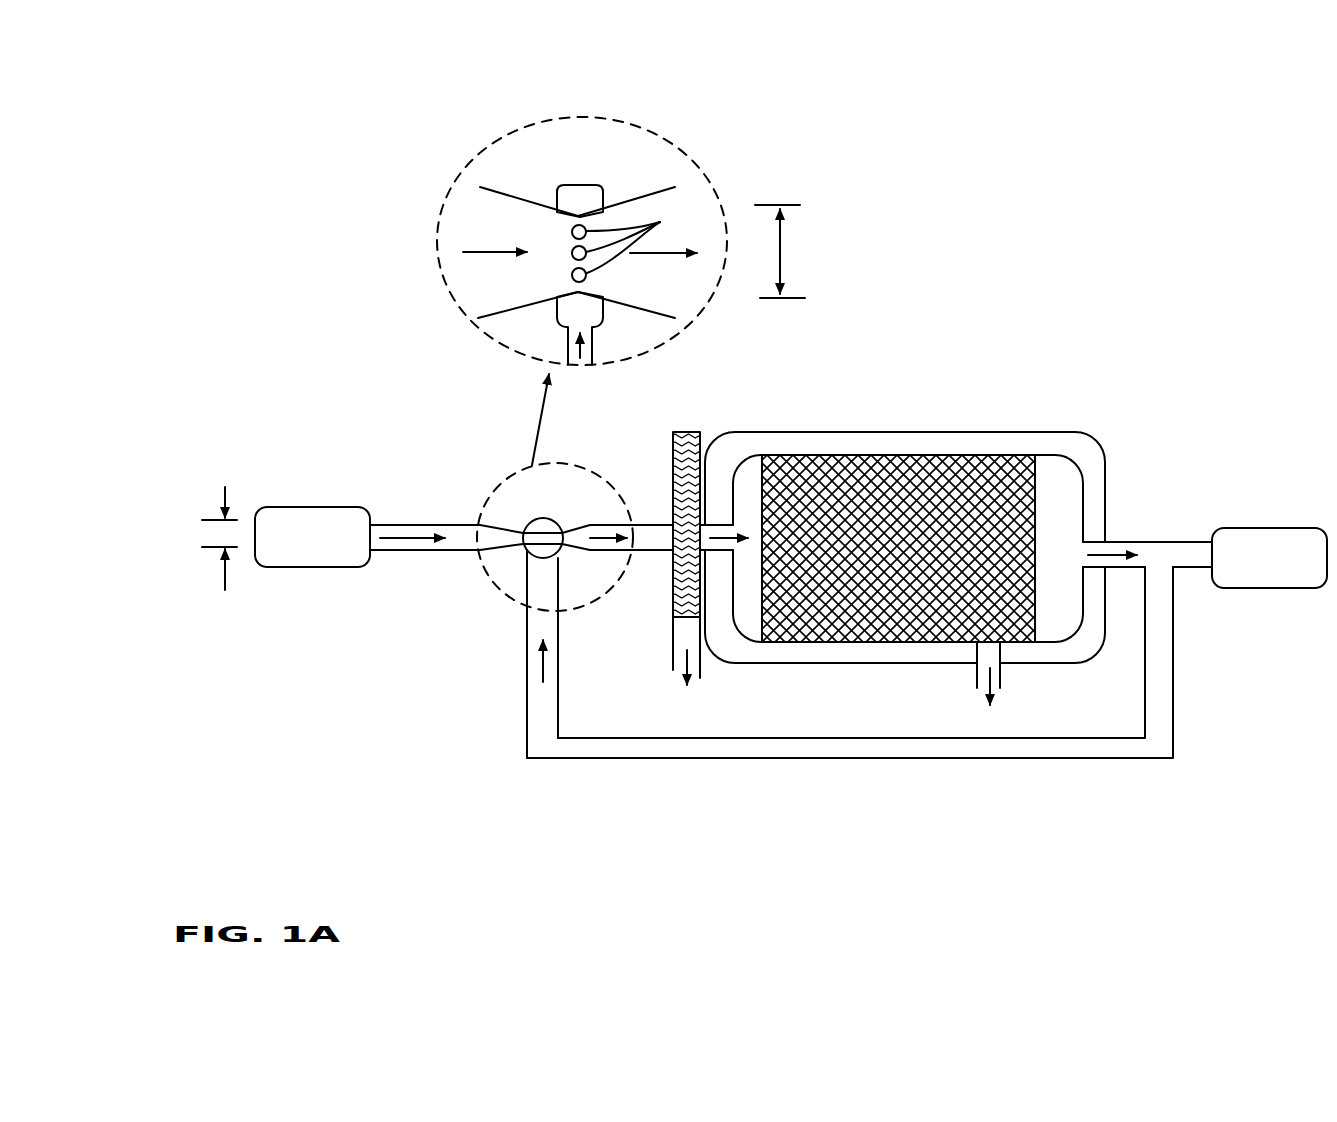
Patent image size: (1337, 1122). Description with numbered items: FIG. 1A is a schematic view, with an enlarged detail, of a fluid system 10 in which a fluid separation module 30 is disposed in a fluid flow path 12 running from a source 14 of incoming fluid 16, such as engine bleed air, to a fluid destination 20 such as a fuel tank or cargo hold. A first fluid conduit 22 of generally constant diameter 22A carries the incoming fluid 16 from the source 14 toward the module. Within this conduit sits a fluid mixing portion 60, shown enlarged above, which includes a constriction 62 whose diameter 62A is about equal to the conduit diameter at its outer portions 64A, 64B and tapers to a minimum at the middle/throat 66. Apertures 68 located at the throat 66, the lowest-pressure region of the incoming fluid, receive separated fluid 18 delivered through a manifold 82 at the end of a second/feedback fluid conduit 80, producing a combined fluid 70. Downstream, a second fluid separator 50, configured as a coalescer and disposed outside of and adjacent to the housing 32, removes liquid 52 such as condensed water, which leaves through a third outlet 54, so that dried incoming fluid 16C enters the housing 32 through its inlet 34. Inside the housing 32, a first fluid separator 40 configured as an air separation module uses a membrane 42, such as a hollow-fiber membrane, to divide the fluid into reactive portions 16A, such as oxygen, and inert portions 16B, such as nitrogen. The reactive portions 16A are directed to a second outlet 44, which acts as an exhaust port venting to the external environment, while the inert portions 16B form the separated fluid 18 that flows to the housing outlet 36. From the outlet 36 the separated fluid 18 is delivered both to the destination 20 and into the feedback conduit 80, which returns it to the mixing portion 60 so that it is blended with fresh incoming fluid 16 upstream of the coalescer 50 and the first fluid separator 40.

The fluid system 10 is at (975, 165).
The fluid flow path 12 is at (432, 725).
The source 14 is at (300, 507).
The incoming fluid 16 is at (400, 537).
The reactive portions 16A is at (992, 695).
The inert portions 16B is at (1110, 550).
The dried incoming fluid 16C is at (720, 537).
The separated fluid 18 is at (543, 662).
The fluid destination 20 is at (1270, 528).
The first fluid conduit 22 is at (413, 550).
The diameter 22A is at (225, 577).
The fluid separation module 30 is at (847, 291).
The housing 32 is at (970, 432).
The inlet 34 is at (713, 562).
The outlet 36 is at (1117, 578).
The first fluid separator 40 is at (872, 455).
The membrane 42 is at (1000, 495).
The second outlet 44 is at (970, 672).
The second fluid separator 50 is at (688, 428).
The liquid 52 is at (688, 680).
The third outlet 54 is at (672, 672).
The fluid mixing portion 60 is at (550, 497).
The constriction 62 is at (623, 178).
The diameter of constriction 62A is at (782, 242).
The outer portion 64A is at (487, 175).
The outer portion 64B is at (673, 178).
The middle/throat 66 is at (545, 192).
The apertures 68 is at (660, 222).
The combined fluid 70 is at (606, 540).
The second/feedback fluid conduit 80 is at (690, 760).
The manifold 82 is at (580, 185).